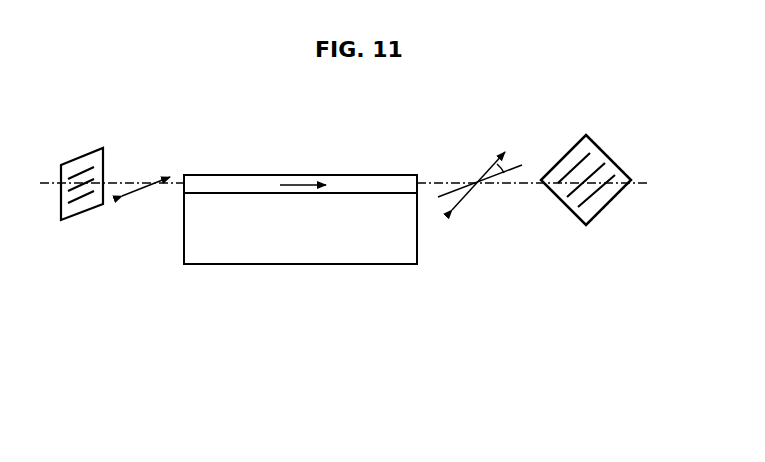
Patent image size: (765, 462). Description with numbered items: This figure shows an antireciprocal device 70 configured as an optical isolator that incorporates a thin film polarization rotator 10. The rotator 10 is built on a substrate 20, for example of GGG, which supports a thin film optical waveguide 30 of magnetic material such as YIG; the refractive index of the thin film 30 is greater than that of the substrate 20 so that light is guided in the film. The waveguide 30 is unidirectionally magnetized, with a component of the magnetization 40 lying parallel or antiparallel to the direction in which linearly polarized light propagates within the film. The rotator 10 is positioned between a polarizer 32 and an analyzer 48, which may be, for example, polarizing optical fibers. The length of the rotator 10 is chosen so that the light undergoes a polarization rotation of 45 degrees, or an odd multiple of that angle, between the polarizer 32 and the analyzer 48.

The polarization rotator 10 is at (224, 291).
The substrate 20 is at (305, 244).
The thin film optical waveguide 30 is at (385, 182).
The magnetization 40 is at (300, 181).
The antireciprocal device 70 is at (300, 199).
The polarizer 32 is at (81, 156).
The 45 degrees polarization rotation 45 is at (512, 162).
The analyzer 48 is at (598, 152).